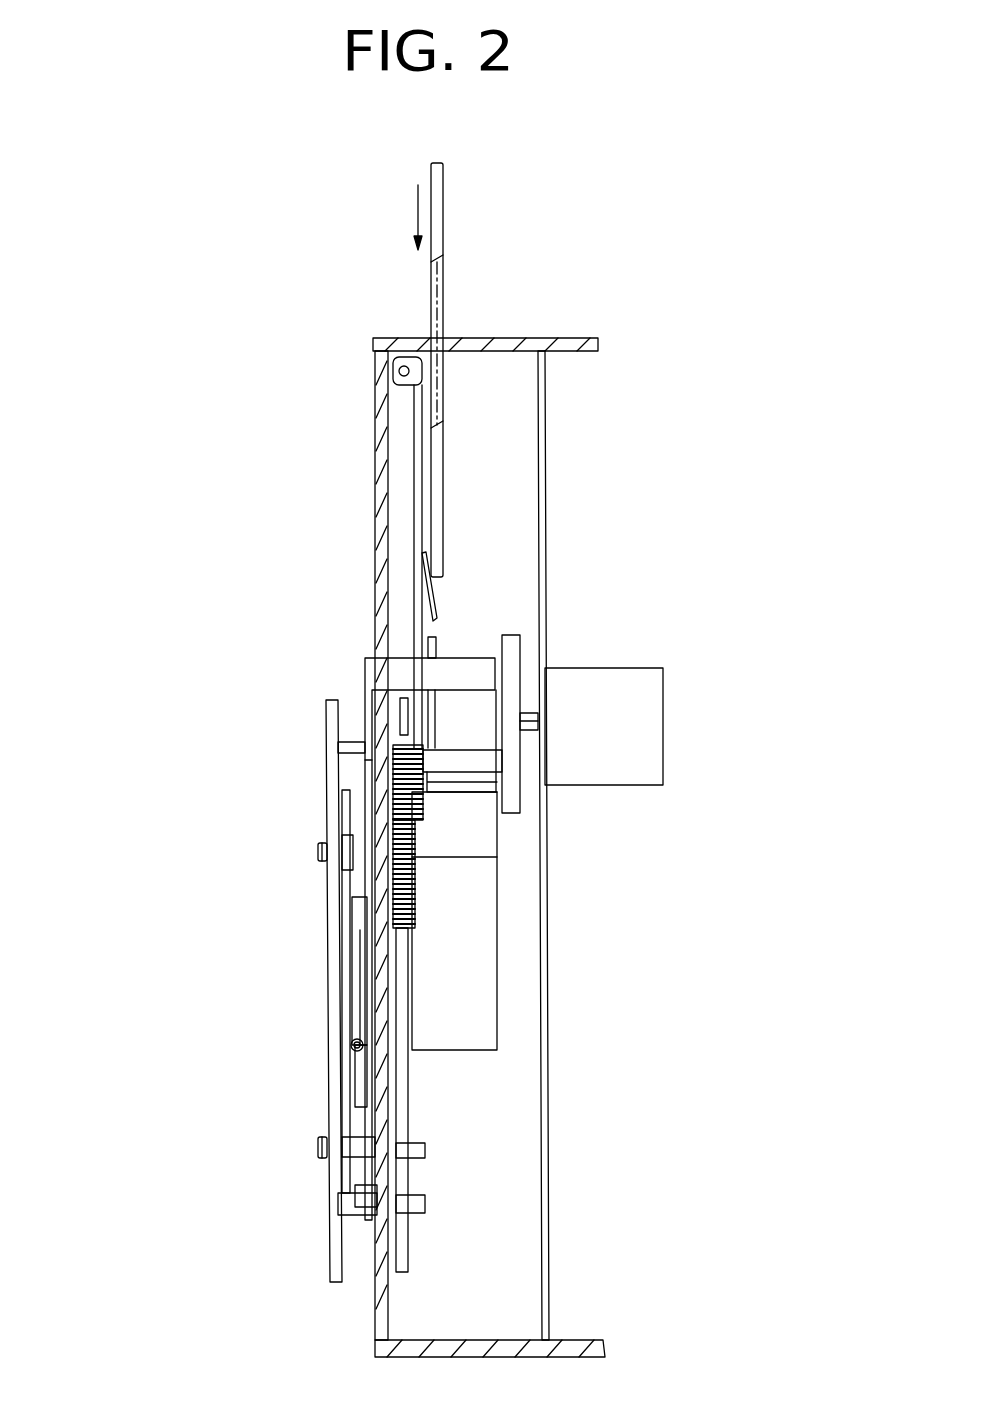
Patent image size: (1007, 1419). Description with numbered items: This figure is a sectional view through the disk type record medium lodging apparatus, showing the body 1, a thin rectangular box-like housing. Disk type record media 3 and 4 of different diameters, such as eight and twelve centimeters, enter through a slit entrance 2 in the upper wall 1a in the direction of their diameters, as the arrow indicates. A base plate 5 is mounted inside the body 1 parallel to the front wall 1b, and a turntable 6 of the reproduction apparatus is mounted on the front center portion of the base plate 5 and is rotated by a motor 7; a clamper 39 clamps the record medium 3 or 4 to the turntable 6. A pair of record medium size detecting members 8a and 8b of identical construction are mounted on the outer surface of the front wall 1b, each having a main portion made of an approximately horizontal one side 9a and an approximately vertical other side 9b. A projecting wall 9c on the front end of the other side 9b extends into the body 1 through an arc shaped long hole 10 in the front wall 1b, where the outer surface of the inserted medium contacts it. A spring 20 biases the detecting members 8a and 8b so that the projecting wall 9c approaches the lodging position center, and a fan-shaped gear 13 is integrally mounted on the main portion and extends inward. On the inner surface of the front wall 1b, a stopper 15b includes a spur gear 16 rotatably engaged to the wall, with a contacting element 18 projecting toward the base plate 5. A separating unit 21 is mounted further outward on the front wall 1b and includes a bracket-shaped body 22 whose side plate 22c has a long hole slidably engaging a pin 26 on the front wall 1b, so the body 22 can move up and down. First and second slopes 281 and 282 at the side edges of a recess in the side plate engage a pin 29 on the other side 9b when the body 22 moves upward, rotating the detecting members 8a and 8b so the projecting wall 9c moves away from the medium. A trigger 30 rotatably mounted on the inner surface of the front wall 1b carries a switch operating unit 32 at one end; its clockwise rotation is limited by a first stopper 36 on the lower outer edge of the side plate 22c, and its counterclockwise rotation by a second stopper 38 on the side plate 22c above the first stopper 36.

The body 1 is at (456, 807).
The upper wall 1a is at (488, 340).
The front wall 1b is at (375, 418).
The slit entrance 2 is at (428, 338).
The disk type record medium 3 is at (468, 370).
The disk type record medium 4 is at (445, 200).
The base plate 5 is at (548, 410).
The turntable 6 is at (507, 635).
The motor 7 is at (634, 668).
The record medium size detecting member 8a is at (352, 937).
The record medium size detecting member 8b is at (354, 672).
The one side 9a is at (352, 988).
The other side 9b is at (365, 772).
The projecting wall 9c is at (474, 658).
The arc shaped long hole 10 is at (375, 658).
The fan-shaped gear 13 is at (416, 878).
The stopper 15b is at (446, 746).
The spur gear 16 is at (424, 805).
The contacting element 18 is at (475, 750).
The spring 20 is at (352, 1048).
The separating unit 21 is at (318, 887).
The body 22 is at (318, 1031).
The side plate 22c is at (327, 965).
The pin 26 is at (318, 852).
The pin 29 is at (338, 748).
The trigger 30 is at (410, 1070).
The switch operating unit 32 is at (355, 1196).
The first stopper 36 is at (427, 1208).
The second stopper 38 is at (427, 1150).
The clamper 39 is at (438, 640).
The first slope 281 is at (342, 802).
The second slope 282 is at (326, 706).